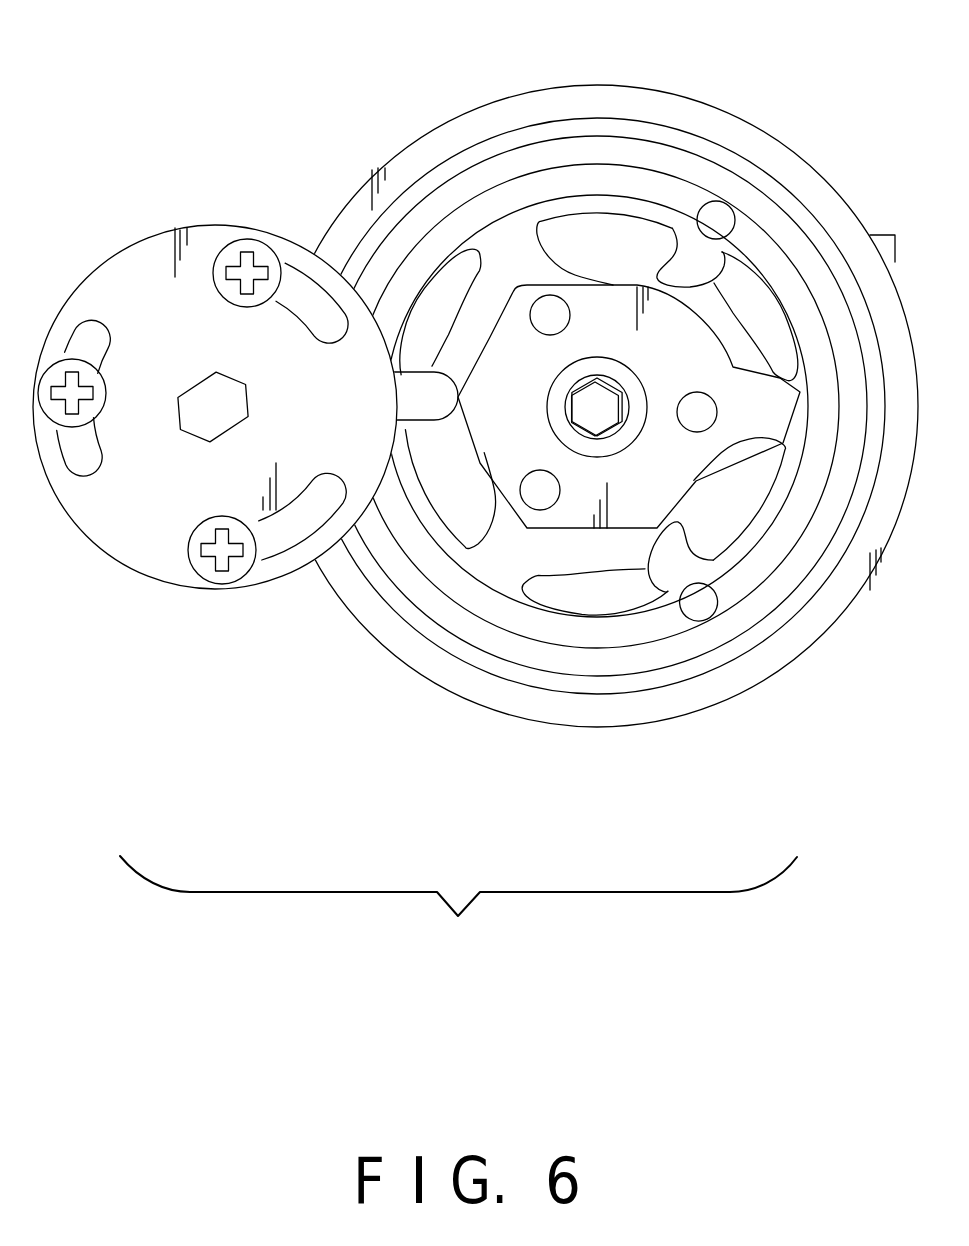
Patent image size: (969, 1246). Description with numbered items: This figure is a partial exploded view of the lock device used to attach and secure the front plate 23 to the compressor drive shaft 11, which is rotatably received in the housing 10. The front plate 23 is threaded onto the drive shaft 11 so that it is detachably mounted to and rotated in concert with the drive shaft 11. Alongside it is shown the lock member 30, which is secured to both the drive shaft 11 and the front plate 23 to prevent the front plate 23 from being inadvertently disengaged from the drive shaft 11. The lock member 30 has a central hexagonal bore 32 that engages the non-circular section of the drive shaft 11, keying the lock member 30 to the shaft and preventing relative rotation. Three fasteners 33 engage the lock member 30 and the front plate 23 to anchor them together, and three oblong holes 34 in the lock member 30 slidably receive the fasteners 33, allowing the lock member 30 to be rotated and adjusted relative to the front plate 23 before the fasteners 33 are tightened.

The housing 10 is at (883, 243).
The compressor drive shaft 11 is at (603, 417).
The front plate 23 is at (657, 473).
The lock member 30 is at (212, 425).
The hexagonal bore 32 is at (203, 422).
The fasteners 33 is at (57, 377).
The oblong holes 34 is at (82, 453).